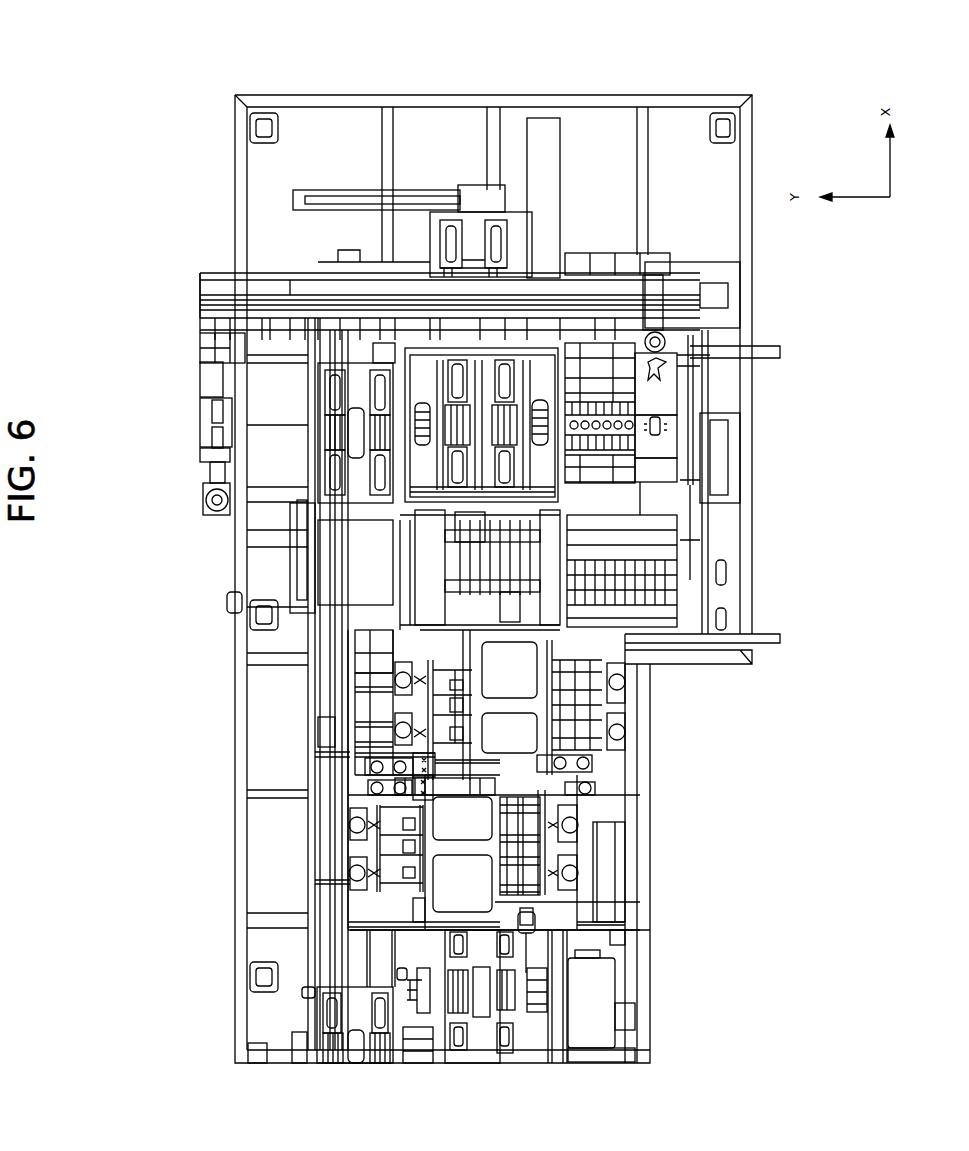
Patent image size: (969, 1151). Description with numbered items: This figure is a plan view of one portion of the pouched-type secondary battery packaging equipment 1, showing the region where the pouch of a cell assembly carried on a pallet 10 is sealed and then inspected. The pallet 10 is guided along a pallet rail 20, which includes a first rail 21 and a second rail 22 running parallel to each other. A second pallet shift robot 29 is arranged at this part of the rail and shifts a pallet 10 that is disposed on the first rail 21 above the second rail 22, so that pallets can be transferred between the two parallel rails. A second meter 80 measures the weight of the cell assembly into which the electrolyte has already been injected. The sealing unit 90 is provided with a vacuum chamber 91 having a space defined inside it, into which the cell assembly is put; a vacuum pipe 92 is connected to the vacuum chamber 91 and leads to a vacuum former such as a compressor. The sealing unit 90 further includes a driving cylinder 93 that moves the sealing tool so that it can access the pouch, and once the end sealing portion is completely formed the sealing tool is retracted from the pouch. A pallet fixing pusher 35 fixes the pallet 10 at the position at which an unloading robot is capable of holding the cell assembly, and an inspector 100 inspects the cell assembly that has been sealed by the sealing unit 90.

The apparatus frame 1 is at (598, 145).
The pallet 10 is at (353, 1008).
The pallet rail 20 is at (358, 316).
The first rail 21 is at (522, 190).
The second rail 22 is at (375, 577).
The second pallet shift robot 29 is at (375, 255).
The pallet fixing pusher 35 is at (543, 443).
The second meter 80 is at (522, 995).
The sealing unit 90 is at (446, 780).
The vacuum chamber 91 is at (517, 708).
The vacuum pipe 92 is at (400, 793).
The driving cylinder 93 is at (393, 698).
The inspector 100 is at (204, 288).